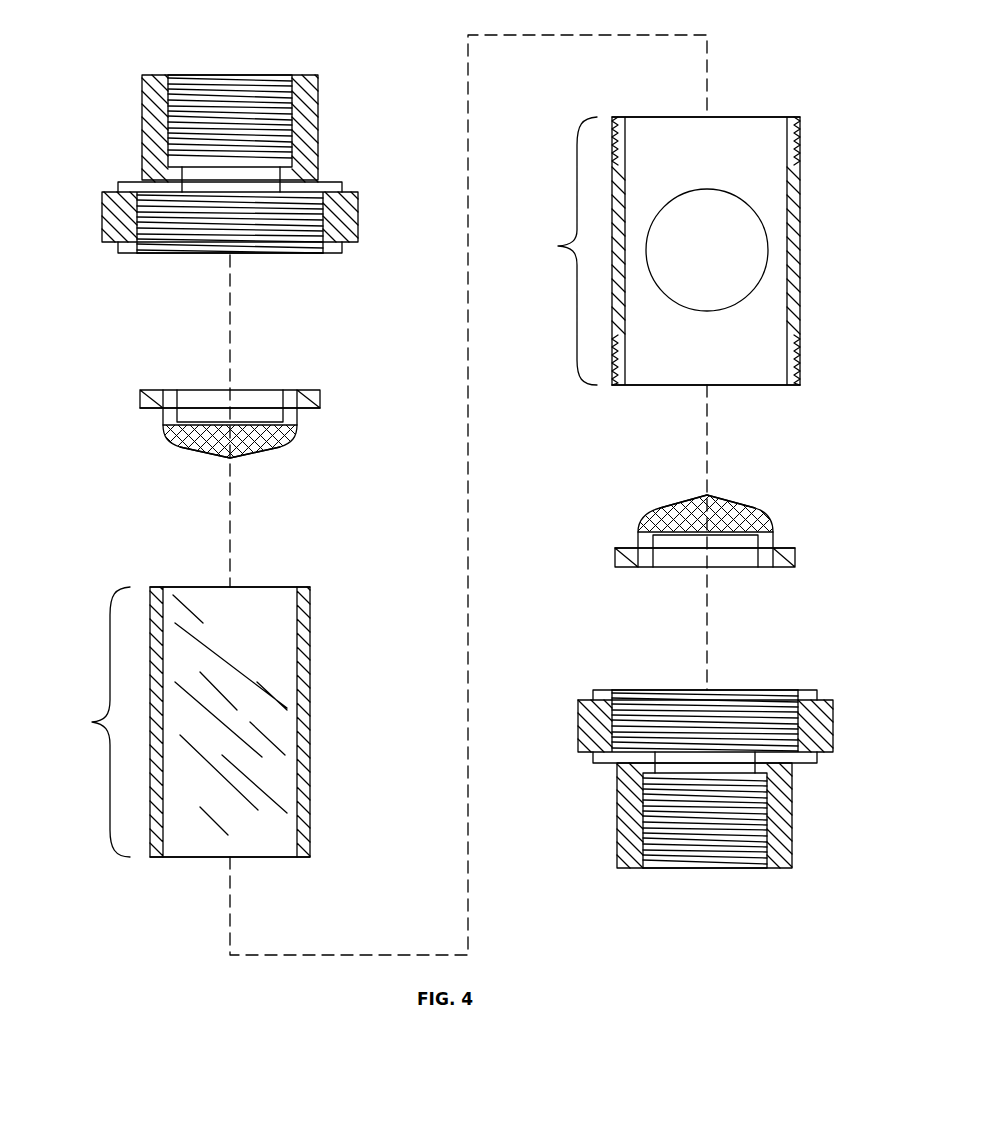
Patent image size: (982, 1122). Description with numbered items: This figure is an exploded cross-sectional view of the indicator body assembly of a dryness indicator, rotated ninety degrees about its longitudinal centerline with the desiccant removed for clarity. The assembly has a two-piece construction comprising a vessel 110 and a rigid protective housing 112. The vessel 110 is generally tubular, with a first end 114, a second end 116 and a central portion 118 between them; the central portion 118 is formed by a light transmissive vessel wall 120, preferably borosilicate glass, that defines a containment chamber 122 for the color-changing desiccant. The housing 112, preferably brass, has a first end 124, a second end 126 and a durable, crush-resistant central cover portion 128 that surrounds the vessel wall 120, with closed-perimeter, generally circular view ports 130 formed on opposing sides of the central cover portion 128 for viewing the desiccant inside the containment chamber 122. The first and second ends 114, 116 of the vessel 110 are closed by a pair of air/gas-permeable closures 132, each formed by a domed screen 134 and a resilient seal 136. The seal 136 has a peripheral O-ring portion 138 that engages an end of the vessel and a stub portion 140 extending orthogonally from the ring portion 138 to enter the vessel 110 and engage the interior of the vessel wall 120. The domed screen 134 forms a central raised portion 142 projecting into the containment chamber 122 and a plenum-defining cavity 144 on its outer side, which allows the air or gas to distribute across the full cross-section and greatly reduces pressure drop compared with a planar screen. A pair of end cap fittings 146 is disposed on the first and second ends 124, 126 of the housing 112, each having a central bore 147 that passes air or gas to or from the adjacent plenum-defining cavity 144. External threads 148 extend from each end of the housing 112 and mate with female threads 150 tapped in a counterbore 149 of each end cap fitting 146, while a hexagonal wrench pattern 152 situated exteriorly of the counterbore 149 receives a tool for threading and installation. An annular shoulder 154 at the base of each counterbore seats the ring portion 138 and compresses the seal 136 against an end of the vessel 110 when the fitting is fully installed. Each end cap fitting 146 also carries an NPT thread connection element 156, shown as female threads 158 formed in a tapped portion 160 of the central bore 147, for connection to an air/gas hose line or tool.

The vessel 110 is at (244, 720).
The rigid protective housing 112 is at (709, 258).
The first end 114 is at (262, 612).
The second end 116 is at (258, 857).
The central portion 118 is at (90, 722).
The light transmissive vessel wall 120 is at (298, 642).
The containment chamber 122 is at (277, 603).
The first end 124 is at (755, 117).
The second end 126 is at (746, 385).
The central cover portion 128 is at (659, 251).
The closed-perimeter view port 130 is at (747, 203).
The air/gas-permeable closure 132 is at (470, 470).
The domed screen 134 is at (468, 474).
The resilient seal 136 is at (470, 470).
The ring portion 138 is at (320, 398).
The stub portion 140 is at (163, 414).
The central raised portion 142 is at (231, 458).
The plenum-defining cavity 144 is at (215, 418).
The end cap fitting 146 is at (462, 470).
The central bore 147 is at (230, 183).
The external threads 148 is at (803, 128).
The counterbore 149 is at (140, 245).
The female threads 150 is at (175, 248).
The hexagonal wrench pattern 152 is at (466, 472).
The annular shoulder 154 is at (288, 188).
The thread connection element 156 is at (318, 105).
The female threads 158 is at (187, 90).
The tapped portion 160 is at (278, 80).